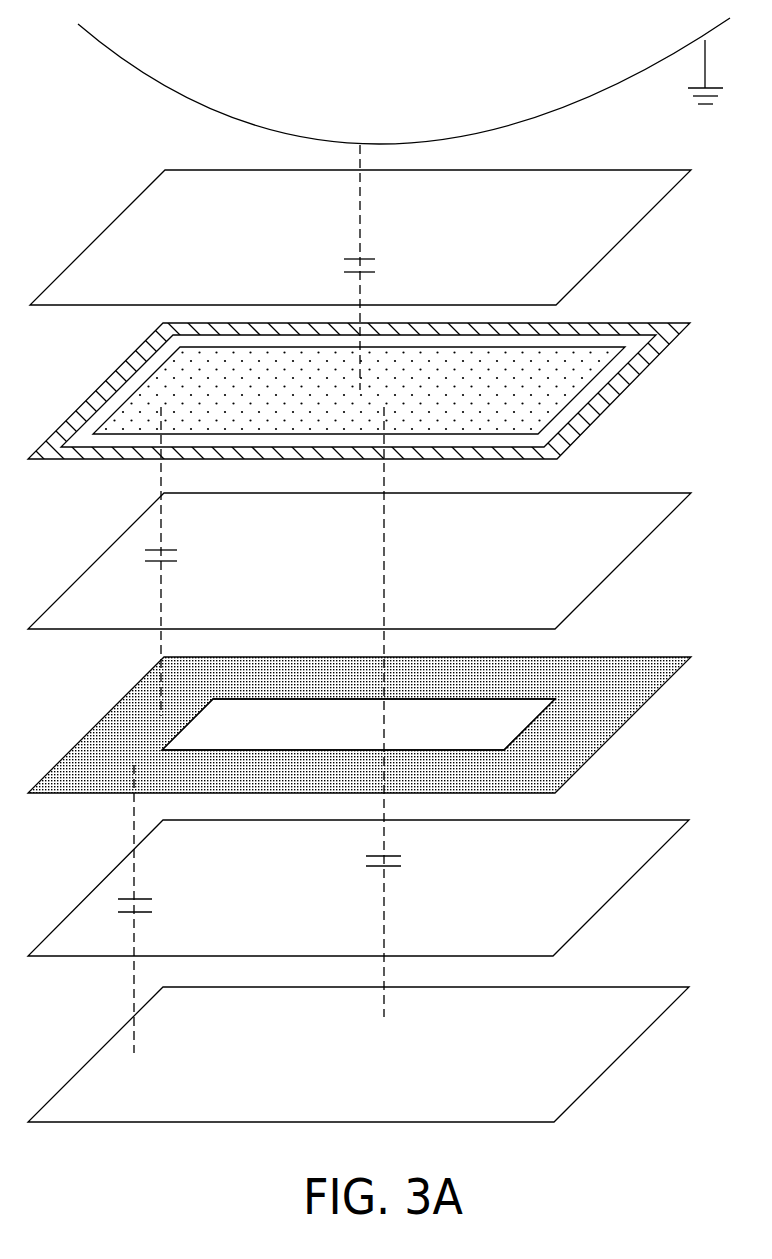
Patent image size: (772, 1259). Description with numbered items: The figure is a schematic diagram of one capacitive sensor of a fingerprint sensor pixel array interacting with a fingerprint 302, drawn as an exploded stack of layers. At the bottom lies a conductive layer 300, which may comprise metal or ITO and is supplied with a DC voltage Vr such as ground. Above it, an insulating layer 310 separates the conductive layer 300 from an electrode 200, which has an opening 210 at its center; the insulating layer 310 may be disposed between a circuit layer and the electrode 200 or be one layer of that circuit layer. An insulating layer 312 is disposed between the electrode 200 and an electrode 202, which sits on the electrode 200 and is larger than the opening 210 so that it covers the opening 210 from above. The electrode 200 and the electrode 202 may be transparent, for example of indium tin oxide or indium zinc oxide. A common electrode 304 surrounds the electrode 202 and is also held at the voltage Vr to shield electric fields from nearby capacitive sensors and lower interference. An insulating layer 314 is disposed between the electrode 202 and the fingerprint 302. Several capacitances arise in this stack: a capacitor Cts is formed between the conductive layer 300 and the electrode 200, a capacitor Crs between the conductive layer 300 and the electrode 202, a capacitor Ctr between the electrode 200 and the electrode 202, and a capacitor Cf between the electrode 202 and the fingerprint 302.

The fingerprint 302 is at (613, 98).
The insulating layer 314 is at (625, 235).
The common electrode 304 is at (636, 320).
The electrode 202 is at (580, 388).
The insulating layer 312 is at (625, 557).
The electrode 200 is at (623, 721).
The opening 210 is at (515, 697).
The insulating layer 310 is at (624, 884).
The conductive layer 300 is at (622, 1053).
The capacitor Cf is at (342, 264).
The capacitor Ctr is at (181, 557).
The capacitor Crs is at (362, 861).
The capacitor Cts is at (153, 903).